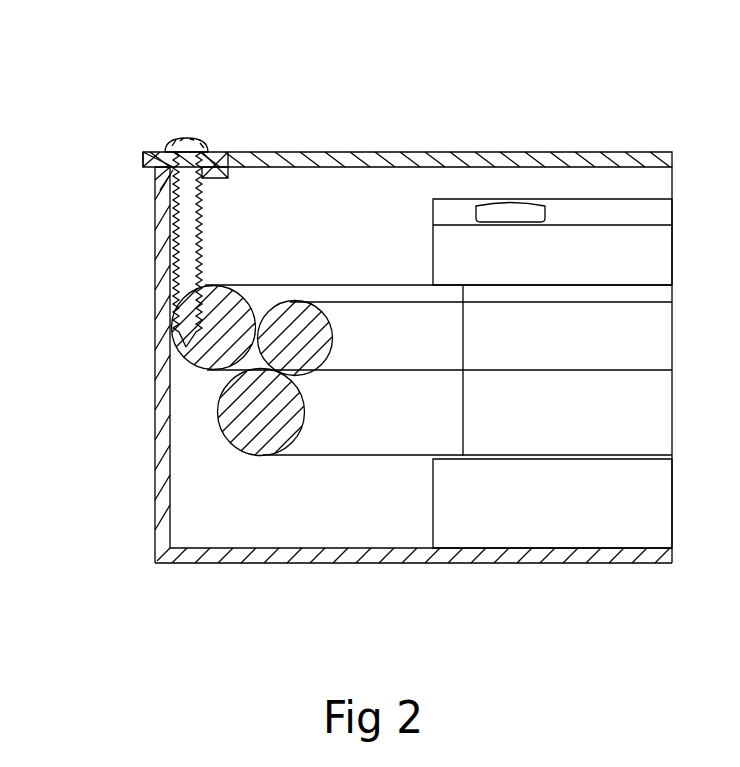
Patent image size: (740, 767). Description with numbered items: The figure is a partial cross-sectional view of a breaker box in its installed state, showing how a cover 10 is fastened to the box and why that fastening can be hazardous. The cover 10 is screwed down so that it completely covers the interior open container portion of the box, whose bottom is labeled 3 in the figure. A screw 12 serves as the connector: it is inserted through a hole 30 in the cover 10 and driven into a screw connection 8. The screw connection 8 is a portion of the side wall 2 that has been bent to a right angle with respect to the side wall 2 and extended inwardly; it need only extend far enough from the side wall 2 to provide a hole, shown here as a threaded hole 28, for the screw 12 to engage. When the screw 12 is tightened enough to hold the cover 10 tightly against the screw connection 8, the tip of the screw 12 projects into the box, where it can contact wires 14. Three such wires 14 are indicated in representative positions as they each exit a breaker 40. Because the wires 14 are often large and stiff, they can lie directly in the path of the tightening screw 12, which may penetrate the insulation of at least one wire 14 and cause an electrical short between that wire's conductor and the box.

The side wall 2 is at (157, 283).
The base plate 3 is at (362, 565).
The screw connection 8 is at (232, 158).
The cover 10 is at (353, 155).
The screw 12 is at (207, 147).
The wires 14 is at (300, 316).
The threaded hole 28 is at (160, 167).
The hole 30 is at (163, 153).
The breaker 40 is at (587, 205).